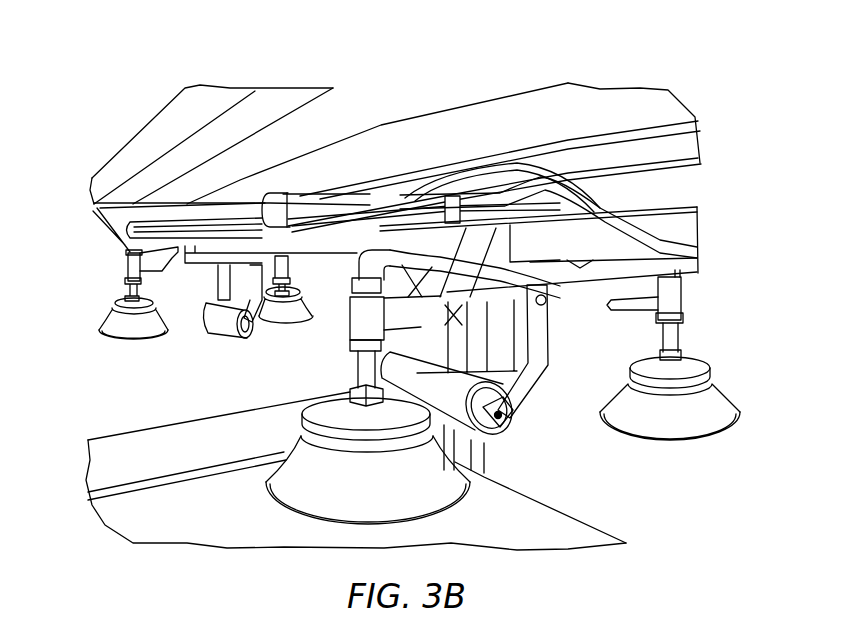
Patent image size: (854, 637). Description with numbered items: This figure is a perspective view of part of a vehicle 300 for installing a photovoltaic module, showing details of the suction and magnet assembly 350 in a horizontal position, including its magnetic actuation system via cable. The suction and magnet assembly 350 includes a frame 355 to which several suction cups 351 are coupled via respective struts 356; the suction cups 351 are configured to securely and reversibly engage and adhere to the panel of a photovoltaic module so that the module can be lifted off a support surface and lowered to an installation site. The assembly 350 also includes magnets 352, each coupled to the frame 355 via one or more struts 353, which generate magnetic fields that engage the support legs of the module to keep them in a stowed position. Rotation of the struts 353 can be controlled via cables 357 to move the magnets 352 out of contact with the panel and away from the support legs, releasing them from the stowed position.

The vehicle 300 is at (668, 70).
The suction and magnet assembly 350 is at (145, 150).
The suction cups 351 is at (112, 322).
The magnets 352 is at (227, 330).
The struts 353 is at (541, 350).
The frame 355 is at (573, 243).
The struts 356 is at (162, 262).
The cables 357 is at (658, 280).